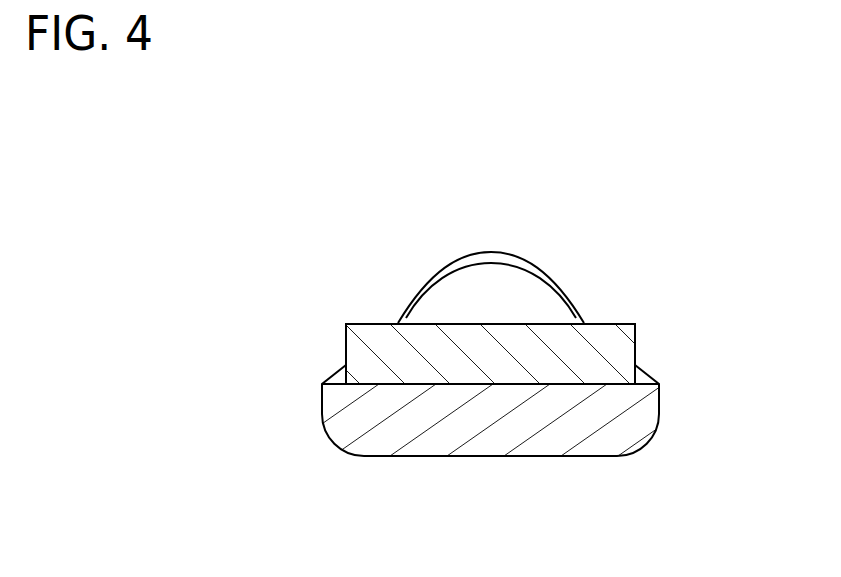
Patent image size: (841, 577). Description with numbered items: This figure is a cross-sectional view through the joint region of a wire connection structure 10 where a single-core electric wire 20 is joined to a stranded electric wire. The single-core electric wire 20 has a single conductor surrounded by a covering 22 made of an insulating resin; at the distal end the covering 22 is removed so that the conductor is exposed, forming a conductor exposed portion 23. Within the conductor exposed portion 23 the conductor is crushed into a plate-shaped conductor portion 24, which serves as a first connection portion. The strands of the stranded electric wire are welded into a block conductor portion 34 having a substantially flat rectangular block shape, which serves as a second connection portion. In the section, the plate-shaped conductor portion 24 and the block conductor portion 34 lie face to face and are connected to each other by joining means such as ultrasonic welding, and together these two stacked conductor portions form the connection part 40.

The light-emitting device 10 is at (515, 138).
The single-core electric wire 20 is at (490, 252).
The covering 22 is at (428, 280).
The conductor exposed portion 23 is at (517, 287).
The plate-shaped conductor portion 24 is at (633, 432).
The block conductor portion 34 is at (623, 352).
The connection part 40 is at (752, 350).